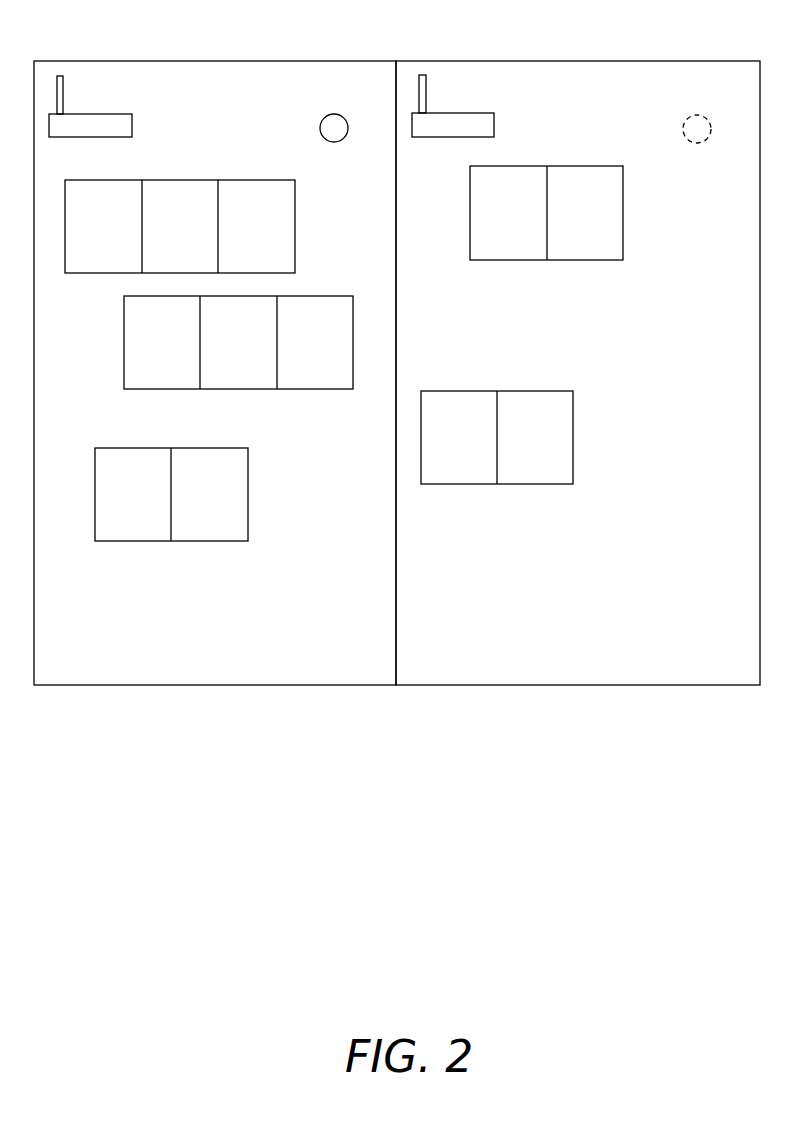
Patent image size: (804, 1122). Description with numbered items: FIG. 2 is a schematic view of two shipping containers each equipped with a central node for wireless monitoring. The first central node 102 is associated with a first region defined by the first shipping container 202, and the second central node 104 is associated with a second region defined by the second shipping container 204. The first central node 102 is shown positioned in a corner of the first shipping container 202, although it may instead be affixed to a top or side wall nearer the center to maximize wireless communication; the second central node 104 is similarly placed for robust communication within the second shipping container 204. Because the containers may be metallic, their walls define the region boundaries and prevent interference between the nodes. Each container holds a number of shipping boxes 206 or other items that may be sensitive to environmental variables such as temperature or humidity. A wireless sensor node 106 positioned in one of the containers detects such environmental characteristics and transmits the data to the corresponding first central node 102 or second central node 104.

The first central node 102 is at (146, 116).
The second central node 104 is at (467, 113).
The wireless sensor node 106 is at (329, 142).
The first shipping container 202 is at (243, 61).
The second shipping container 204 is at (527, 61).
The shipping boxes 206 is at (216, 617).